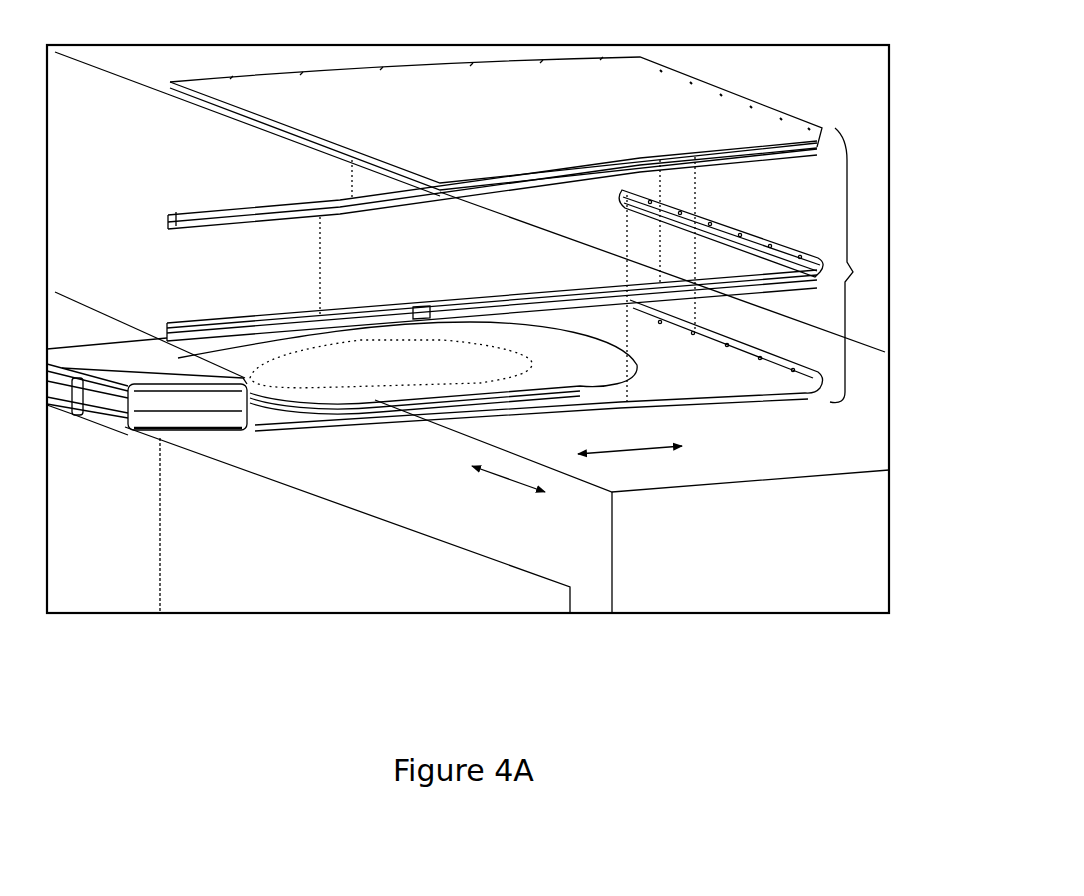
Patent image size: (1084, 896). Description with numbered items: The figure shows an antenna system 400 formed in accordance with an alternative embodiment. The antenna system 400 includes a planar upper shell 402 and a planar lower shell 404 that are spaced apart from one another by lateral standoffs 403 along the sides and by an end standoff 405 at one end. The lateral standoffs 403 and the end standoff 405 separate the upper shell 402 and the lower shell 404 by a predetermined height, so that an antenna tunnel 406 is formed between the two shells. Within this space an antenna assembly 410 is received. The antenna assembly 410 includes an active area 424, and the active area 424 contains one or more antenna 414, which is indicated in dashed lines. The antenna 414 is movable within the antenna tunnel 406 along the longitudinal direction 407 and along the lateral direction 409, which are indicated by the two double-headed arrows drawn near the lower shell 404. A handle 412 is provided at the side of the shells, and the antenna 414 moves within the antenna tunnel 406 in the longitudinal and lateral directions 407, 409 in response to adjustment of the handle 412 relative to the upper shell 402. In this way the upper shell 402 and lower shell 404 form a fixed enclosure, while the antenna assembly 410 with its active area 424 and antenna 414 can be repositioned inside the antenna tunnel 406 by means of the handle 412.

The antenna system 400 is at (853, 272).
The planar upper shell 402 is at (406, 82).
The lateral standoffs 403 is at (252, 212).
The planar lower shell 404 is at (777, 405).
The end standoff 405 is at (618, 195).
The antenna tunnel 406 is at (714, 263).
The longitudinal direction 407 is at (648, 452).
The lateral direction 409 is at (510, 478).
The antenna assembly 410 is at (150, 333).
The handle 412 is at (205, 435).
The antenna 414 is at (369, 335).
The active area 424 is at (583, 355).